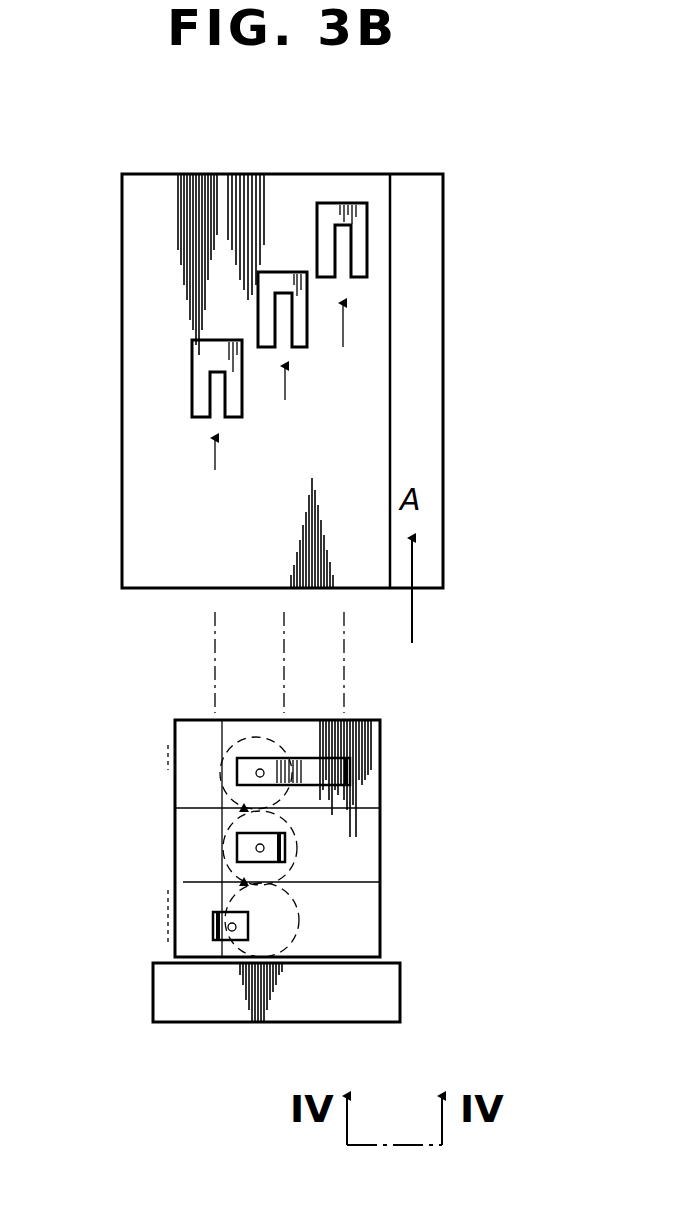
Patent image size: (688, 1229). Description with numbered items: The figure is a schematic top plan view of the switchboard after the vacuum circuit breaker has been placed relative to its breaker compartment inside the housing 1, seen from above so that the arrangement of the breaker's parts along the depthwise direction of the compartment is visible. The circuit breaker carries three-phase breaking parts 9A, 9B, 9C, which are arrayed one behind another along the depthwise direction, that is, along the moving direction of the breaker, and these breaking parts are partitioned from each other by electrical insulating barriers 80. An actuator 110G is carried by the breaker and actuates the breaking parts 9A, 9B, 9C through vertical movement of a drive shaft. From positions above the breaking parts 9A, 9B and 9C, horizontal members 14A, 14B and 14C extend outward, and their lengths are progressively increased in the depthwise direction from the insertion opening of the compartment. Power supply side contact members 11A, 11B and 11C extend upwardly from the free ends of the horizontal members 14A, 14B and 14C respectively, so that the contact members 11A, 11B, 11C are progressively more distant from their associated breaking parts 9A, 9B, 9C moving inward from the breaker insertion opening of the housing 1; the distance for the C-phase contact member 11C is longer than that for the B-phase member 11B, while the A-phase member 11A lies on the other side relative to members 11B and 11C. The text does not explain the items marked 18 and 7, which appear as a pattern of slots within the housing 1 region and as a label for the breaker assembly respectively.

The housing 1 is at (408, 174).
The servo pattern 18 is at (210, 340).
The head assembly 7 is at (60, 843).
The electrical insulating barriers 80 is at (192, 720).
The C-phase breaking part 9C is at (292, 757).
The C-phase power supply side contact member 11C is at (350, 775).
The horizontal member 14C is at (243, 773).
The B-phase breaking part 9B is at (223, 825).
The B-phase power supply side contact member 11B is at (287, 845).
The horizontal member 14B is at (237, 848).
The A-phase breaking part 9A is at (288, 927).
The A-phase power supply side contact member 11A is at (213, 935).
The horizontal member 14A is at (213, 925).
The actuator 110G is at (388, 996).